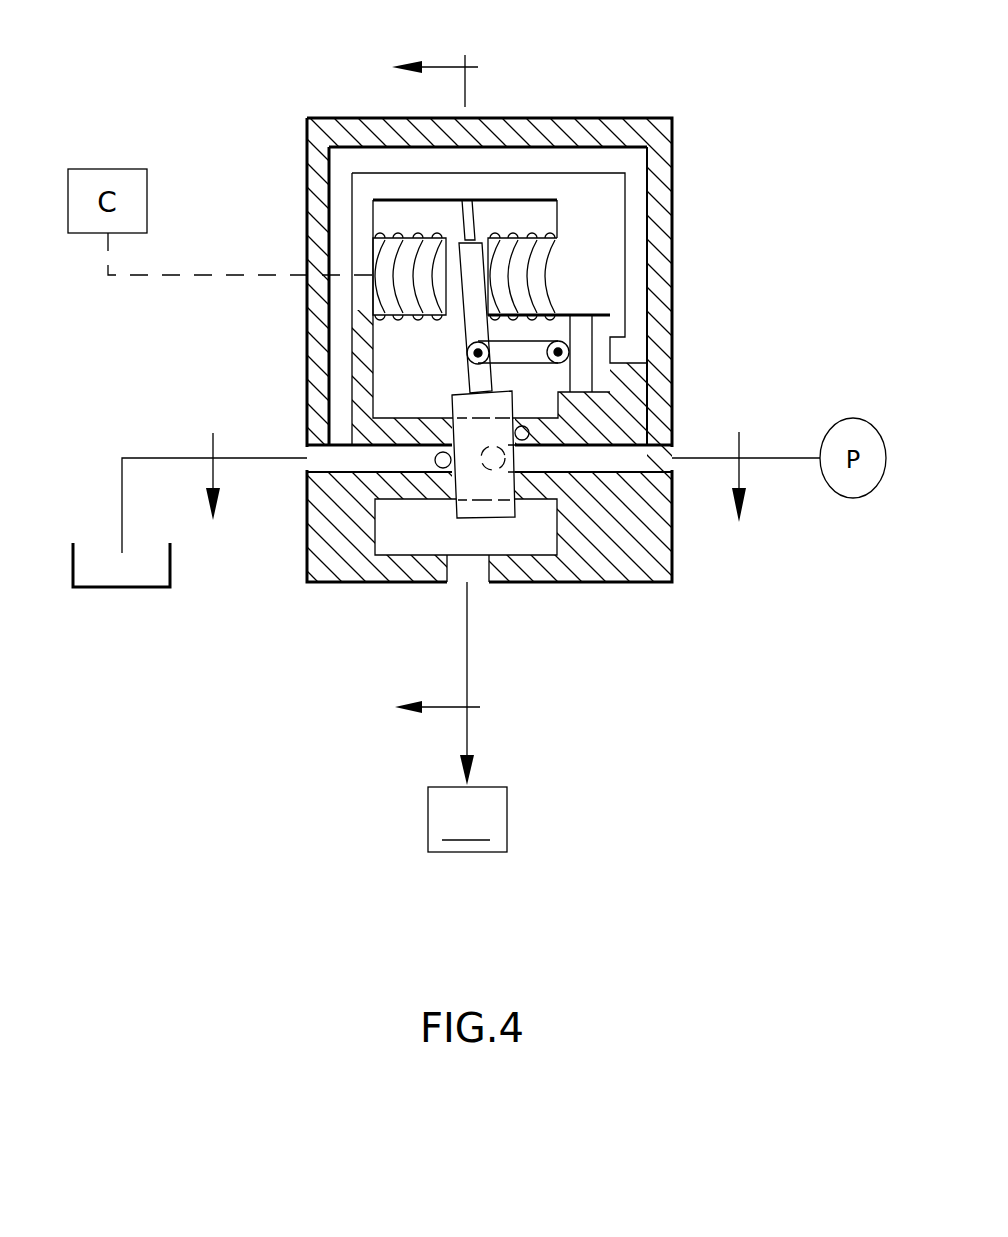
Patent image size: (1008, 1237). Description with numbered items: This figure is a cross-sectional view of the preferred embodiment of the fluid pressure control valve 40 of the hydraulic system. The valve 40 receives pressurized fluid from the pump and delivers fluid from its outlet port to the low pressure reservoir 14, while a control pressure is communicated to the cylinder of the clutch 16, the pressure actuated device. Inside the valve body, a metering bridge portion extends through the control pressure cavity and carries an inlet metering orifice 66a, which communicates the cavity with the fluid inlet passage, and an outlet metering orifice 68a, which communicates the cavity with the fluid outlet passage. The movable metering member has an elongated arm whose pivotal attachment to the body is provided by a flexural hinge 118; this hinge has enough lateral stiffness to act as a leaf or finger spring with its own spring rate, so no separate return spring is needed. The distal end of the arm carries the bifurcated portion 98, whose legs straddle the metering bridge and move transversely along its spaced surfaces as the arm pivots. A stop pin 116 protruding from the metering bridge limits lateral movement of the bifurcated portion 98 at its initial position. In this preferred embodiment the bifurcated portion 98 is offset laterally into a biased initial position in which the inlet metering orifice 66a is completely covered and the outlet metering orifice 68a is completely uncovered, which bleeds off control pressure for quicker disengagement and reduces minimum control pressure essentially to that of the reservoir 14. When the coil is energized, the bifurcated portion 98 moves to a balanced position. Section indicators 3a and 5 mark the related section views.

The fluid pressure control valve 40 is at (672, 135).
The bifurcated portion 98 is at (542, 523).
The flexural hinge 118 is at (472, 228).
The inlet metering orifice 66a is at (493, 463).
The outlet metering orifice 68a is at (440, 463).
The stop pin 116 is at (528, 433).
The low pressure reservoir 14 is at (93, 568).
The clutch 16 is at (467, 717).
The section view 3a is at (477, 500).
The section view 5 is at (419, 388).